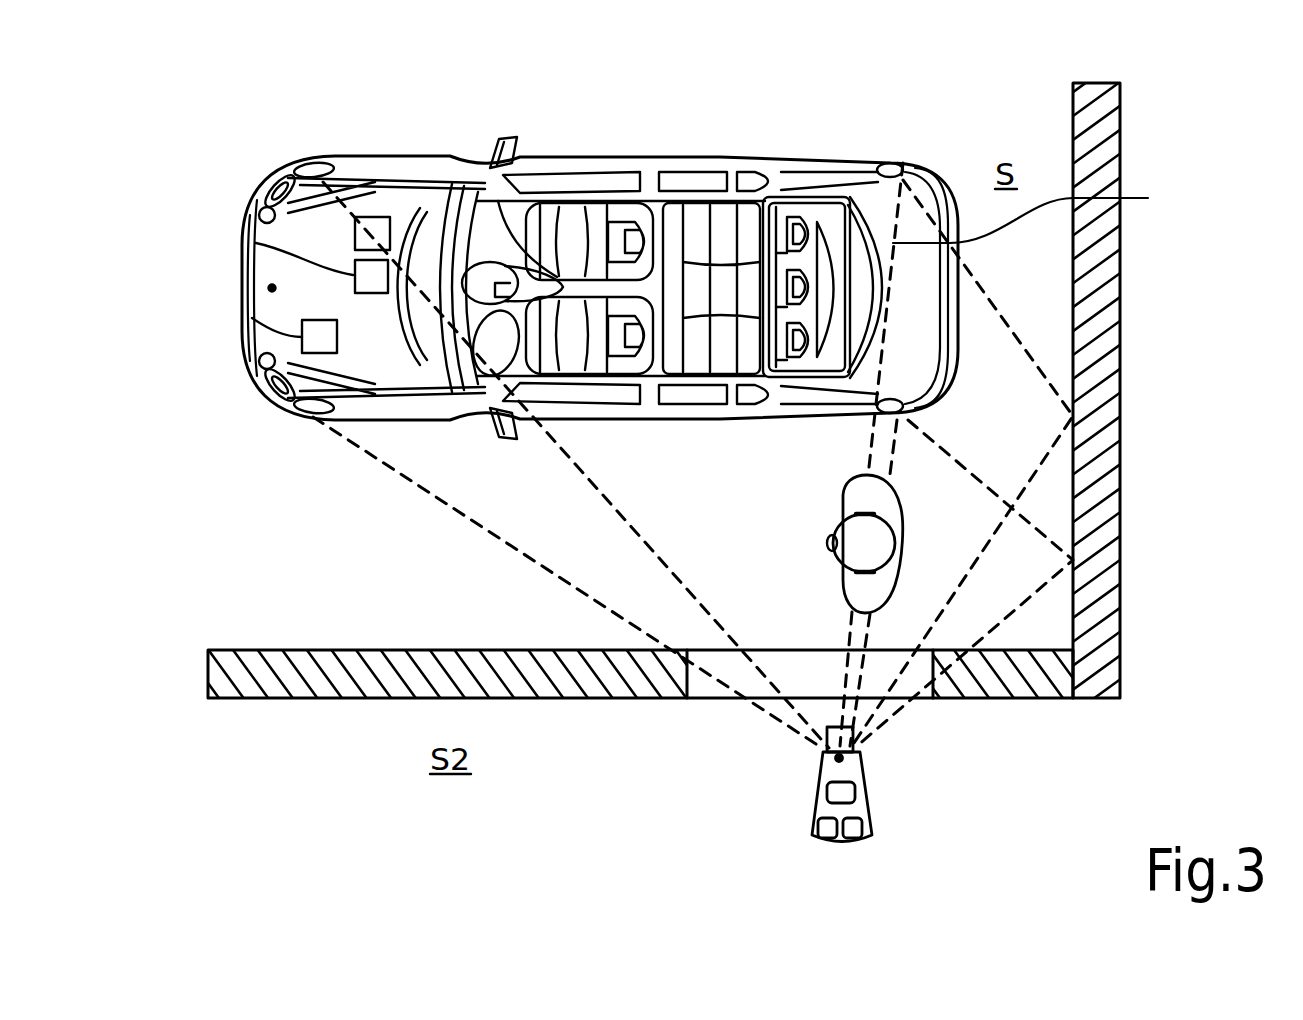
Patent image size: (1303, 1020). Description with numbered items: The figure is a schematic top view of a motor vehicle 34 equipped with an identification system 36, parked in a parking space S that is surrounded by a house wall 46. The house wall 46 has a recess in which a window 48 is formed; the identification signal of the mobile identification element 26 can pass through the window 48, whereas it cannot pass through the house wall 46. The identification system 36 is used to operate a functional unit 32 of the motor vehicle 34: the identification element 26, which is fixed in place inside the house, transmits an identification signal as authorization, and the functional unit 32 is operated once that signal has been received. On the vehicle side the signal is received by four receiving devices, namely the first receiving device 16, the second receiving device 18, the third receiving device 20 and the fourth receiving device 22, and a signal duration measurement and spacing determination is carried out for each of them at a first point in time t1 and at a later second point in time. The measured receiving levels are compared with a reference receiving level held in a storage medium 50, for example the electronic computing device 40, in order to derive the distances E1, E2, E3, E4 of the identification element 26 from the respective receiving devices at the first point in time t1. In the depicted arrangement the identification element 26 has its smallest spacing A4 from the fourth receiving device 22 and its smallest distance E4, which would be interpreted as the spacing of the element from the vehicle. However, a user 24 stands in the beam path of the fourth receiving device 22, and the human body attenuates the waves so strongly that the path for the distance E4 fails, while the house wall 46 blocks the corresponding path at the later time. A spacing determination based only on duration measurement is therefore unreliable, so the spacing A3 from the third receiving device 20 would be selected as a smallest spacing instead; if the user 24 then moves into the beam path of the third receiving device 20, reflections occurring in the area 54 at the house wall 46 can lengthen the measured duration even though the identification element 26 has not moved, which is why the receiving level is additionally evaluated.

The first receiving device 16 is at (310, 418).
The second receiving device 18 is at (316, 170).
The third receiving device 20 is at (903, 175).
The fourth receiving device 22 is at (900, 423).
The user 24 is at (820, 552).
The mobile identification element 26 is at (823, 808).
The functional unit 32 is at (302, 336).
The motor vehicle 34 is at (795, 155).
The identification system 36 is at (840, 105).
The electronic computing device 40 is at (262, 243).
The house wall 46 is at (1107, 125).
The window 48 is at (925, 700).
The storage medium 50 is at (372, 216).
The area 54 is at (1098, 441).
The first point in time t1 is at (816, 556).
The first distance E1 is at (522, 553).
The second distance E2 is at (595, 483).
The third distance E3 is at (1095, 212).
The fourth distance E4 is at (895, 445).
The spacing from the third receiving device A3 is at (1005, 325).
The spacing from the fourth receiving device A4 is at (1050, 578).